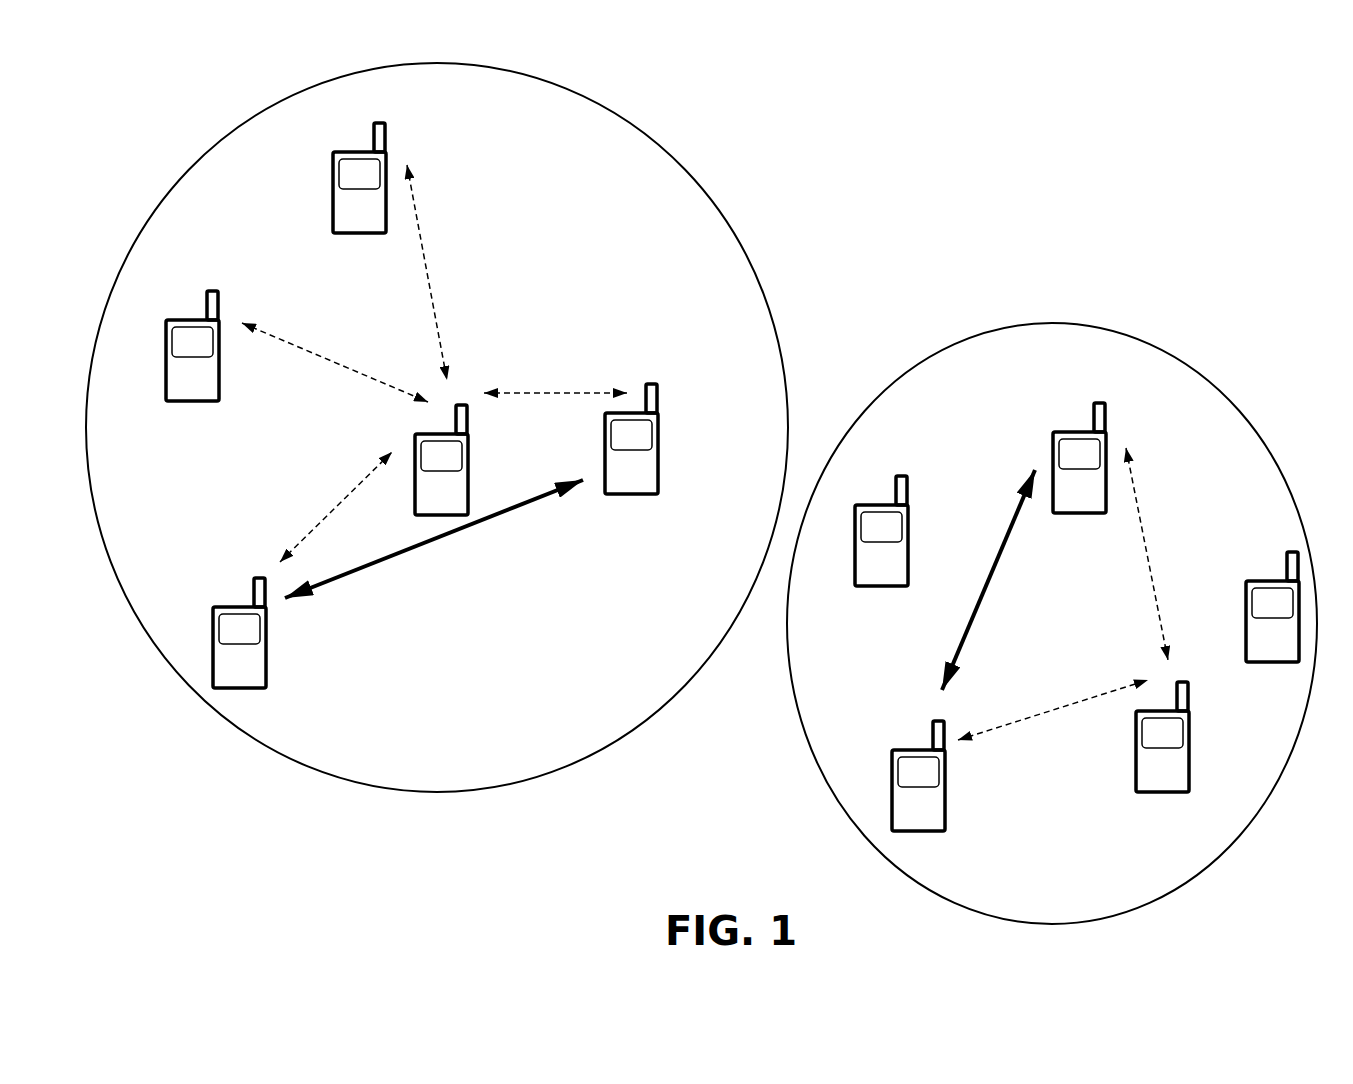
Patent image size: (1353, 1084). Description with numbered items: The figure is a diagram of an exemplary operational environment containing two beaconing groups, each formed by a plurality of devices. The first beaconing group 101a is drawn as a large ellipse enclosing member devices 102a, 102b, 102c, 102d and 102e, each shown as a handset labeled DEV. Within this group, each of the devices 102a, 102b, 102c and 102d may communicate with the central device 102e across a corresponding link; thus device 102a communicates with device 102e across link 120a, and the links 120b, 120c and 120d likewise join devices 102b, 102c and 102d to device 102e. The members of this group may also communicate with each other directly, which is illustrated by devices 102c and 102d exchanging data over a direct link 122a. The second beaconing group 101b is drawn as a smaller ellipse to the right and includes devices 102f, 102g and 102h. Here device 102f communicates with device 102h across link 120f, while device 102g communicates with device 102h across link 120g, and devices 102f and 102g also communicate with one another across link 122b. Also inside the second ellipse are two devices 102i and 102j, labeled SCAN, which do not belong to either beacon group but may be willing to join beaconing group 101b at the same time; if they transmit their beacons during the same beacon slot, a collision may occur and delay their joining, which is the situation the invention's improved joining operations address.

The beaconing group 101a is at (668, 141).
The beaconing group 101b is at (1092, 325).
The device (DEV) 102a is at (220, 313).
The device (DEV) 102b is at (386, 145).
The device (DEV) 102c is at (254, 590).
The device (DEV) 102d is at (659, 405).
The device (DEV) 102e is at (469, 457).
The device (DEV) 102f is at (946, 741).
The device (DEV) 102g is at (1106, 425).
The device (DEV) 102h is at (1190, 735).
The device 102i is at (908, 500).
The device 102j is at (1246, 590).
The link 120a is at (303, 347).
The link 120b is at (427, 271).
The link 120c is at (338, 505).
The link 120d is at (578, 392).
The link 120f is at (1015, 723).
The link 120g is at (1149, 555).
The direct link 122a is at (501, 515).
The link 122b is at (997, 562).